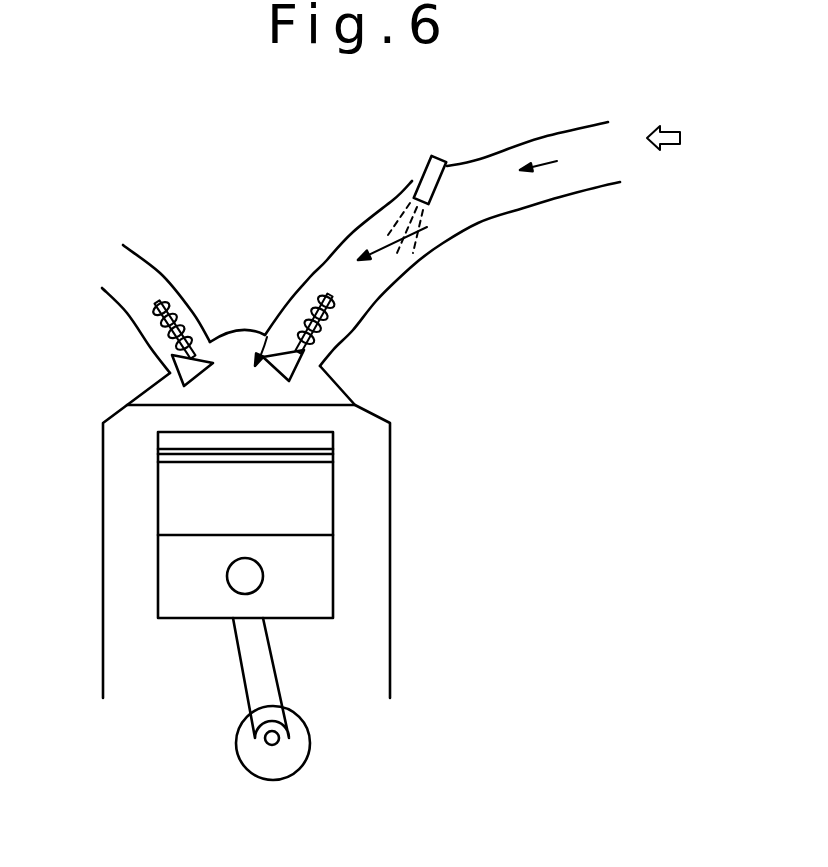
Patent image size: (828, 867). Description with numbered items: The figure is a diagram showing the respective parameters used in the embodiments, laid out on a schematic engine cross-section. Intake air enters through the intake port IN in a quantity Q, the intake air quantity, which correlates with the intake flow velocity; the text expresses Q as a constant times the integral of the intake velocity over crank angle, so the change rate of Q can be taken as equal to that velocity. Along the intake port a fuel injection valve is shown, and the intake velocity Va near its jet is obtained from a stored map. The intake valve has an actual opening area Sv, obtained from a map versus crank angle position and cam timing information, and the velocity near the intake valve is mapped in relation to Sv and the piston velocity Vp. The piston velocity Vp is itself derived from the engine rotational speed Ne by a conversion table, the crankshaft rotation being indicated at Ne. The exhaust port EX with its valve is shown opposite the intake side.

The exhaust port with exhaust valve EX is at (142, 315).
The intake port IN is at (442, 244).
The intake valve opening area Sv is at (305, 365).
The intake velocity near the jet of the fuel injection valve Va is at (431, 204).
The intake air quantity Q is at (681, 136).
The piston velocity Vp is at (362, 490).
The engine rotational speed Ne is at (228, 778).